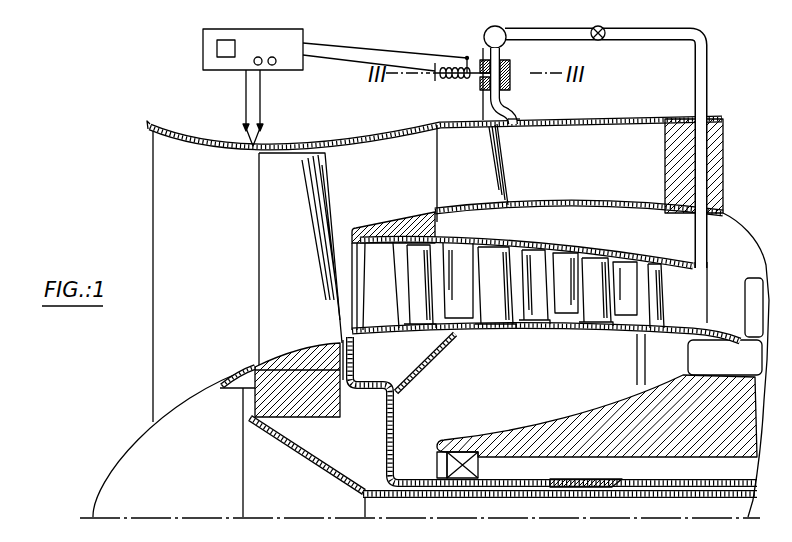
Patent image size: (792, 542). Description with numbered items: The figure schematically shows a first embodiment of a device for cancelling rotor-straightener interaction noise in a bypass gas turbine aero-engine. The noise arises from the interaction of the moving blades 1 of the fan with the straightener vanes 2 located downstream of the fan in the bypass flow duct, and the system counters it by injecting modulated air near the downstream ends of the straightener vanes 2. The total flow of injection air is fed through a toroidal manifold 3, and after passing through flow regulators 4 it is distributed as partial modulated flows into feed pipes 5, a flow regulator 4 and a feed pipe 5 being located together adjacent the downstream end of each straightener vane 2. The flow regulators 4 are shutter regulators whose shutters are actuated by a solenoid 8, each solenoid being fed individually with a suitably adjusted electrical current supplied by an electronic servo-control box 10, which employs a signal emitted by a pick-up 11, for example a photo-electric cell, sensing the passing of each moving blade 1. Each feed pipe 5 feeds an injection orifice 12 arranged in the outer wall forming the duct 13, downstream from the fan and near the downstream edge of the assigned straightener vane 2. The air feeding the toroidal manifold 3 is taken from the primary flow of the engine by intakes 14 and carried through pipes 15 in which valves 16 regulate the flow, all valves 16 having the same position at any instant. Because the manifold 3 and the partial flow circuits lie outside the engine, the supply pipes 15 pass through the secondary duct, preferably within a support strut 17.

The moving blades 1 is at (270, 284).
The straightener vanes 2 is at (452, 166).
The toroidal manifold 3 is at (486, 38).
The flow regulators 4 is at (512, 72).
The feed pipes 5 is at (497, 107).
The solenoid 8 is at (438, 78).
The electronic servo-control box 10 is at (203, 43).
The pick-up 11 is at (253, 147).
The injection orifice 12 is at (518, 121).
The duct 13 is at (614, 181).
The intakes 14 is at (702, 270).
The pipes 15 is at (704, 188).
The valves 16 is at (604, 38).
The support strut 17 is at (716, 142).